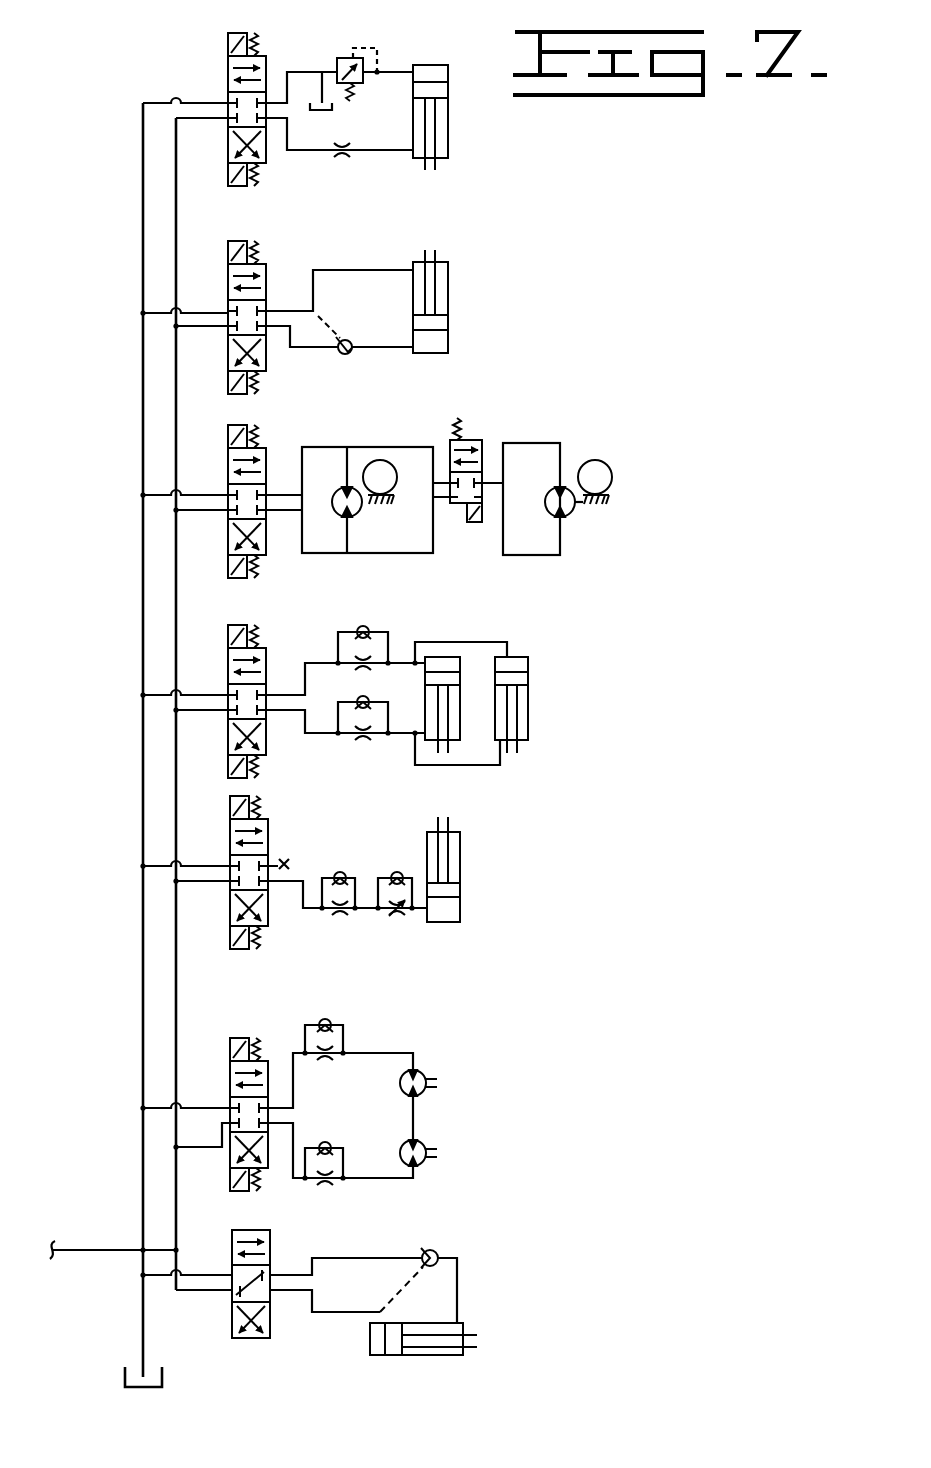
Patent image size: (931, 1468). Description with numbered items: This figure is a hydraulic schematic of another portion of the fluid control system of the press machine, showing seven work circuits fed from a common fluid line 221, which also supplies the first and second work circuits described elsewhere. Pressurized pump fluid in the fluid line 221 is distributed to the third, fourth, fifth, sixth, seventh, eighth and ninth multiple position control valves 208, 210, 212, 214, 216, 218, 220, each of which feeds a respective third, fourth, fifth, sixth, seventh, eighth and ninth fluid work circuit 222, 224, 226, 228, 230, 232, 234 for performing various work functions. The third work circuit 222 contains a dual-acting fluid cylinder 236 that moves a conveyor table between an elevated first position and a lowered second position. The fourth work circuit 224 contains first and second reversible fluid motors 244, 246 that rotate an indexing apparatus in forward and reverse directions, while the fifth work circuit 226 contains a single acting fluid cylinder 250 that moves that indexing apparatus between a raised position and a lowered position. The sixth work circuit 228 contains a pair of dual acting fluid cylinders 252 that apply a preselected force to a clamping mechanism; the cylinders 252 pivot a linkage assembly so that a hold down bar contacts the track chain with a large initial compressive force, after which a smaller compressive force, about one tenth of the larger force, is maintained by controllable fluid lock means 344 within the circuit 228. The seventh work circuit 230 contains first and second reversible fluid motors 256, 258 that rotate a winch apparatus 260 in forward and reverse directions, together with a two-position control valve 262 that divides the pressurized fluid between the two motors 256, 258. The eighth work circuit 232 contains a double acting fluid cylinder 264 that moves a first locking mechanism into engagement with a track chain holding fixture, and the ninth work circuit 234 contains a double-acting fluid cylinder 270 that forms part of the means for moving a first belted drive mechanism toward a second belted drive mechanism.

The third multiple position control valve 208 is at (233, 1327).
The fourth multiple position control valve 210 is at (268, 1160).
The fifth multiple position control valve 212 is at (268, 918).
The sixth multiple position control valve 214 is at (267, 752).
The seventh multiple position control valve 216 is at (267, 554).
The eighth multiple position control valve 218 is at (267, 367).
The ninth multiple position control valve 220 is at (267, 163).
The fluid line 221 is at (102, 1247).
The third fluid work circuit 222 is at (331, 1321).
The fourth fluid work circuit 224 is at (322, 1122).
The fifth fluid work circuit 226 is at (337, 881).
The sixth fluid work circuit 228 is at (377, 701).
The seventh fluid work circuit 230 is at (407, 497).
The eighth fluid work circuit 232 is at (334, 324).
The ninth fluid work circuit 234 is at (335, 123).
The dual-acting fluid cylinder 236 is at (447, 1357).
The first reversible fluid motor 244 is at (425, 1143).
The second reversible fluid motor 246 is at (425, 1072).
The single acting fluid cylinder 250 is at (460, 865).
The pair of dual acting fluid cylinders 252 is at (529, 683).
The first reversible fluid motor 256 is at (353, 518).
The second reversible fluid motor 258 is at (573, 512).
The winch apparatus 260 is at (369, 462).
The two-position control valve 262 is at (482, 443).
The double acting fluid cylinder 264 is at (448, 298).
The double-acting fluid cylinder 270 is at (448, 138).
The controllable fluid lock means 344 is at (400, 639).